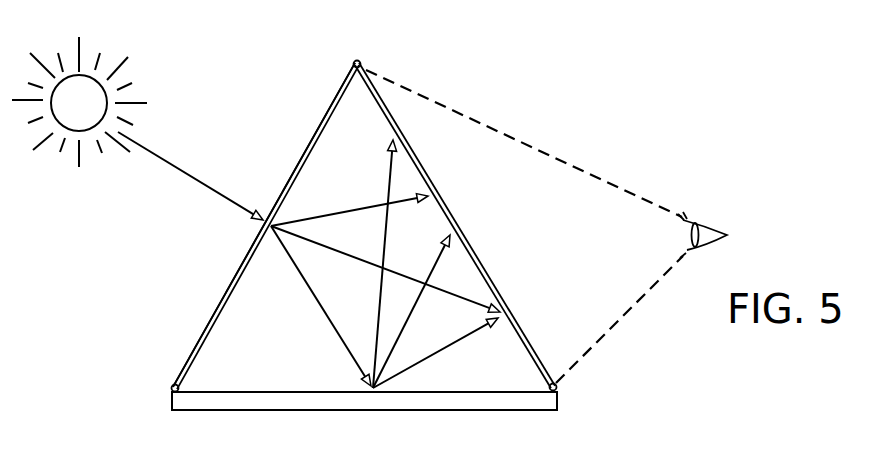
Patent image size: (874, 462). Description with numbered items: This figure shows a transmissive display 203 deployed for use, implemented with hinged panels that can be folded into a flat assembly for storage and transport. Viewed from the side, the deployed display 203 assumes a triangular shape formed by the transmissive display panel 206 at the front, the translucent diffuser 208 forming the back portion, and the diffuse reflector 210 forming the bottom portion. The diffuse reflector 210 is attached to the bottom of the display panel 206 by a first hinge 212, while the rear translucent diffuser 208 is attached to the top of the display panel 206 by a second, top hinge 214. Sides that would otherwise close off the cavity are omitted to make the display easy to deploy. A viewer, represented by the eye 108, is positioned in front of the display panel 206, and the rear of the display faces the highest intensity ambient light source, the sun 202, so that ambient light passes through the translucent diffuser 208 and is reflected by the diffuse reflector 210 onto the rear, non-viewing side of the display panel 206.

The eye 108 is at (703, 215).
The sun 202 is at (72, 133).
The display 203 is at (554, 85).
The transmissive display panel 206 is at (416, 160).
The translucent diffuser 208 is at (187, 362).
The diffuse reflector 210 is at (253, 412).
The first hinge 212 is at (558, 388).
The second hinge 214 is at (361, 62).